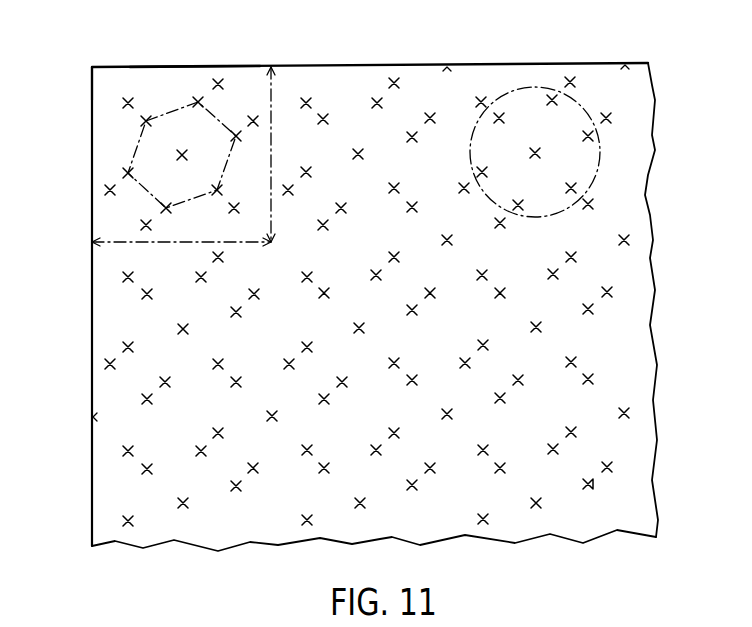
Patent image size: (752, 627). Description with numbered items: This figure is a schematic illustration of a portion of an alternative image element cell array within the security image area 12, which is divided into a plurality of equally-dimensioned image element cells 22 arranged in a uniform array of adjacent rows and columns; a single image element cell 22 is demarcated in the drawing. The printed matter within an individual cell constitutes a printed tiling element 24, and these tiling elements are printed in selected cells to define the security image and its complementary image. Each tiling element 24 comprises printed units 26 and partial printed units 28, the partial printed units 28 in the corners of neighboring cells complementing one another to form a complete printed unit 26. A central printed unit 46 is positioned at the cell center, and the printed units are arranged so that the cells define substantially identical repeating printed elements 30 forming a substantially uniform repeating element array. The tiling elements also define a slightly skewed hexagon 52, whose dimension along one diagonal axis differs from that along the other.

The security image area 12 is at (562, 63).
The image element cell 22 is at (272, 93).
The printed tiling element 24 is at (177, 72).
The printed unit 26 is at (272, 242).
The partial printed unit 28 is at (93, 67).
The repeating printed element 30 is at (600, 170).
The central printed unit 46 is at (177, 328).
The skewed hexagon 52 is at (138, 140).